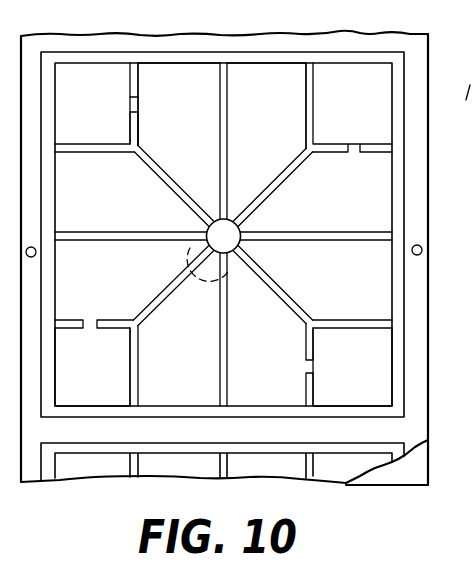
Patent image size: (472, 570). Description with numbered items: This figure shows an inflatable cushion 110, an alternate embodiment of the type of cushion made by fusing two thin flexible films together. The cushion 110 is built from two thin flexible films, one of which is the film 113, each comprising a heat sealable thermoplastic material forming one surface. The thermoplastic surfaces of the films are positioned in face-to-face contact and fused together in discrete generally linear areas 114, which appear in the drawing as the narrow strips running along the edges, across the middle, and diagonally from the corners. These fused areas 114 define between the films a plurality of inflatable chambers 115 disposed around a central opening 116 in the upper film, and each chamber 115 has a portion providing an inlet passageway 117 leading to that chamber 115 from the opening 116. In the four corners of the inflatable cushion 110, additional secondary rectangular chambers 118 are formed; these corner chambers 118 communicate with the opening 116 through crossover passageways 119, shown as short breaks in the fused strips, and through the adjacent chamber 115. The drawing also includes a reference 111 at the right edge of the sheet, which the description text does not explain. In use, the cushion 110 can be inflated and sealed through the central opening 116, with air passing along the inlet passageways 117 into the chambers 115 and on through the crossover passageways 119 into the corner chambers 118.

The inflatable cushion 110 is at (352, 34).
The frame side edge 111 is at (423, 390).
The thin flexible film 113 is at (412, 472).
The discrete generally linear areas 114 is at (147, 190).
The inflatable chambers 115 is at (203, 141).
The central opening 116 is at (232, 228).
The inlet passageway 117 is at (182, 278).
The secondary rectangular chambers 118 is at (105, 376).
The crossover passageways 119 is at (133, 104).